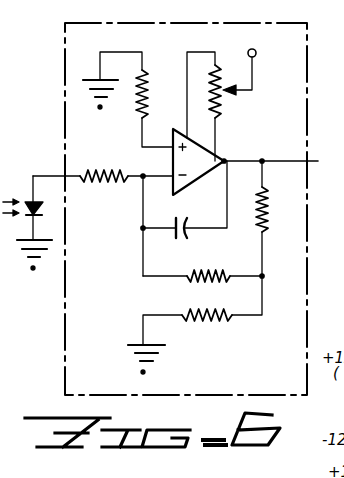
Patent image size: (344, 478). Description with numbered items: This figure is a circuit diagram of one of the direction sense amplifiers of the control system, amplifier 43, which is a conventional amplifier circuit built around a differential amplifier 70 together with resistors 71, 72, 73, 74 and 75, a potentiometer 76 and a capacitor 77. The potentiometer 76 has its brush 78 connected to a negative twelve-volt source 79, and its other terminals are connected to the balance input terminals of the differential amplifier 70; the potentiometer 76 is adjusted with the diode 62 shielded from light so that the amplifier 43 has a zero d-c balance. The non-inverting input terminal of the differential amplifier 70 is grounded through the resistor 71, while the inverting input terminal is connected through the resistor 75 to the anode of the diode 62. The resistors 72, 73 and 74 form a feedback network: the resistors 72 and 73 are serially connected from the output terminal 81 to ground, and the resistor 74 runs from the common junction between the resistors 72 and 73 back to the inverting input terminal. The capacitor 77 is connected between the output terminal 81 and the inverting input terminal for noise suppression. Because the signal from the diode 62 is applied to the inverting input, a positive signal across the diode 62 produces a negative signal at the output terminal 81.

The amplifier 43 is at (288, 363).
The diode 62 is at (27, 198).
The differential amplifier 70 is at (197, 180).
The resistor 71 is at (147, 87).
The resistor 72 is at (268, 198).
The resistor 73 is at (198, 321).
The resistor 74 is at (187, 278).
The resistor 75 is at (111, 170).
The potentiometer 76 is at (221, 113).
The capacitor 77 is at (190, 233).
The brush 78 is at (254, 78).
The negative 12-volt source 79 is at (248, 52).
The output terminal 81 is at (247, 159).